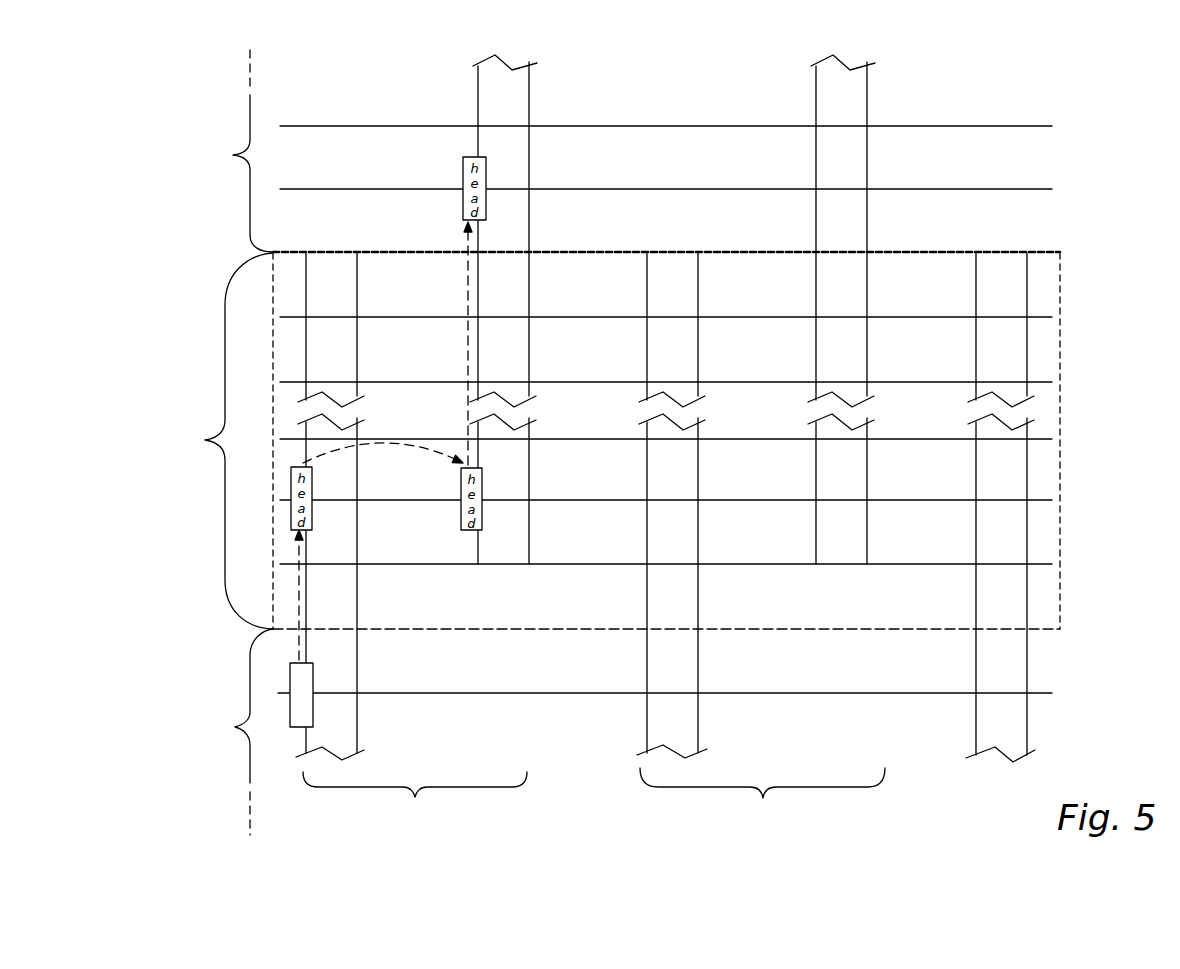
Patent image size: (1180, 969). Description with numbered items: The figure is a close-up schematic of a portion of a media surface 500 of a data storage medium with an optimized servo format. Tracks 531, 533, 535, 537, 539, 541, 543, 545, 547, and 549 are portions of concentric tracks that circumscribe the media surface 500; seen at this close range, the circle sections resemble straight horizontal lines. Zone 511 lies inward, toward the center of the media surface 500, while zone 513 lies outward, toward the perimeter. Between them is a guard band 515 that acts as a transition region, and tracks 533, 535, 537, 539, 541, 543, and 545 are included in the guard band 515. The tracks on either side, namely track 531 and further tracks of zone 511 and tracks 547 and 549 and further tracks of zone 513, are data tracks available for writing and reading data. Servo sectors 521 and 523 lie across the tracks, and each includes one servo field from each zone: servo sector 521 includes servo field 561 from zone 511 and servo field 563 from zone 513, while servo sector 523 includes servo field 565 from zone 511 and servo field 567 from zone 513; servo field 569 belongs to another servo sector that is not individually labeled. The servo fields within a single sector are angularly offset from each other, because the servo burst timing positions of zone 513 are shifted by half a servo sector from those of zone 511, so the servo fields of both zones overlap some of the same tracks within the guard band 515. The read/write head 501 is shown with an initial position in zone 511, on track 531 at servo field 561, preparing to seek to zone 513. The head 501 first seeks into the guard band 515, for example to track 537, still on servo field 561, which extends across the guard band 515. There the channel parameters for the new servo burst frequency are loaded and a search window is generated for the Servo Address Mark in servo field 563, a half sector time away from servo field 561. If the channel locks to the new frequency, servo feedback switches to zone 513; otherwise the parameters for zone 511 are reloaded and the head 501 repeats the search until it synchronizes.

The media surface 500 is at (1095, 82).
The read/write head 501 is at (290, 716).
The inner zone 511 is at (239, 706).
The outer zone 513 is at (235, 173).
The guard band 515 is at (220, 441).
The servo sector 521 is at (415, 799).
The servo sector 523 is at (762, 800).
The track 531 is at (1072, 693).
The track 533 is at (1072, 629).
The track 535 is at (1072, 564).
The track 537 is at (1072, 500).
The track 539 is at (1072, 439).
The track 541 is at (1072, 382).
The track 543 is at (1072, 317).
The track 545 is at (1072, 252).
The track 547 is at (1072, 189).
The track 549 is at (1072, 126).
The servo field 561 is at (357, 600).
The servo field 563 is at (529, 348).
The servo field 565 is at (698, 531).
The servo field 567 is at (867, 348).
The servo field 569 is at (976, 532).